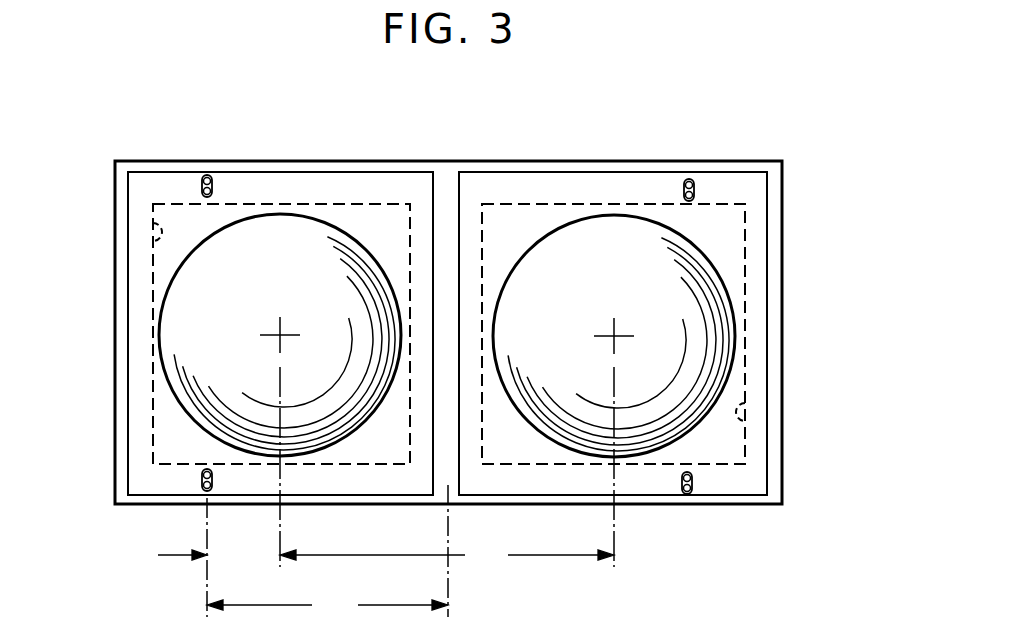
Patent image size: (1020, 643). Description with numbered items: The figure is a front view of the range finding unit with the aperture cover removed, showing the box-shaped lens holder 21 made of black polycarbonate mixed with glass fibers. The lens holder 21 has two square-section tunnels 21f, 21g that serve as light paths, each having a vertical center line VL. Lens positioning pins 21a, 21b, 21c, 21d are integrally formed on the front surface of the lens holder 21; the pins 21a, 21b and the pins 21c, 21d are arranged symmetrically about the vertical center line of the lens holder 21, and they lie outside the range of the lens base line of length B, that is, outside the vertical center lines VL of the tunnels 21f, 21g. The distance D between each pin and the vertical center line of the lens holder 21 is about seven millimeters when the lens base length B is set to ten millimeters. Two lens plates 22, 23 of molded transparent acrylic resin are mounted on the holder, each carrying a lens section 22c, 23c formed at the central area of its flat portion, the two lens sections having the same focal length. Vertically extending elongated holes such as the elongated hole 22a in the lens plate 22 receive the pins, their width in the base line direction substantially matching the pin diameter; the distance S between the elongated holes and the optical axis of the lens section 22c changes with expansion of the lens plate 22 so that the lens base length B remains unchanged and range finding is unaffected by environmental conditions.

The lens holder 21 is at (743, 530).
The lens positioning pin 21a is at (212, 188).
The lens positioning pin 21b is at (203, 489).
The lens positioning pin 21c is at (697, 190).
The lens positioning pin 21d is at (684, 498).
The tunnel 21f is at (148, 237).
The tunnel 21g is at (750, 412).
The lens plate 22 is at (140, 296).
The elongated hole 22a is at (208, 174).
The lens section 22c is at (178, 336).
The lens plate 23 is at (780, 262).
The lens section 23c is at (605, 243).
The vertical center line VL is at (280, 364).
The distance S is at (206, 555).
The lens base length B is at (447, 556).
The distance D is at (327, 607).